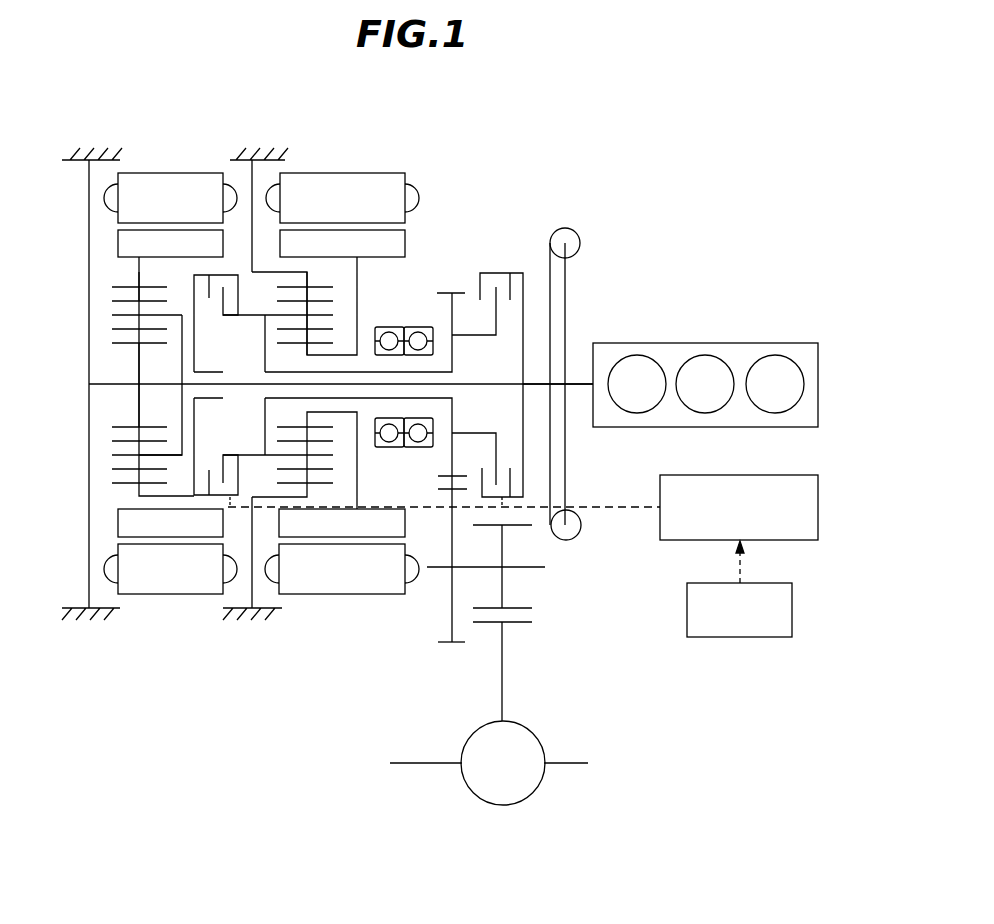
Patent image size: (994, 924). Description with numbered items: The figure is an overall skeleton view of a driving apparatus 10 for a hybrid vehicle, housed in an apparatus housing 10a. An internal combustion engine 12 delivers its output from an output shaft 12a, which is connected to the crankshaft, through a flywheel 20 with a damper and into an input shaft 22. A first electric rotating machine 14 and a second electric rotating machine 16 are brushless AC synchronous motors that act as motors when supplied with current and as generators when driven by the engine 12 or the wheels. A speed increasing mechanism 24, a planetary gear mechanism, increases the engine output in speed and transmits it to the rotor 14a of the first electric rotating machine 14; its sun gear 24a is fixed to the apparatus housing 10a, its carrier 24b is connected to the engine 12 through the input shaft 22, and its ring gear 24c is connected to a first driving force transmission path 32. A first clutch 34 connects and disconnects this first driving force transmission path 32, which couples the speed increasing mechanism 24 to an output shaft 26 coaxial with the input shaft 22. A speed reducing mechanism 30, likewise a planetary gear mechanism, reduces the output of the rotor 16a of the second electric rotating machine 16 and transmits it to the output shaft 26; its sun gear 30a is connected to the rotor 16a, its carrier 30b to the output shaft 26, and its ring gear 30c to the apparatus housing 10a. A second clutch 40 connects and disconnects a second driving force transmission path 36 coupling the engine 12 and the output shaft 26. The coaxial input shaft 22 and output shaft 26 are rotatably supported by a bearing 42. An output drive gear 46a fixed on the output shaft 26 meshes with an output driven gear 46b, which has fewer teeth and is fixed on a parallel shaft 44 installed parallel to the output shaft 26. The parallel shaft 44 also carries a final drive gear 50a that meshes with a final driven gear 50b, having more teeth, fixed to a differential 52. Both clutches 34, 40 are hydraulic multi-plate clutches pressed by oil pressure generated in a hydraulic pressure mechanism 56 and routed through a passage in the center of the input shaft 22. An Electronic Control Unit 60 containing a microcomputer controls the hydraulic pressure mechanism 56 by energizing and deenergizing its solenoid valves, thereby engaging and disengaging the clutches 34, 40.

The driving apparatus 10 is at (565, 215).
The apparatus housing 10a is at (118, 610).
The internal combustion engine 12 is at (762, 343).
The output shaft 12a is at (576, 387).
The first electric rotating machine 14 is at (176, 173).
The rotor 14a is at (118, 522).
The second electric rotating machine 16 is at (345, 173).
The rotor 16a is at (407, 243).
The flywheel 20 is at (567, 302).
The input shaft 22 is at (472, 386).
The speed increasing mechanism 24 is at (101, 379).
The sun gear 24a is at (137, 357).
The carrier 24b is at (117, 315).
The ring gear 24c is at (137, 279).
The output shaft 26 is at (263, 397).
The speed reducing mechanism 30 is at (330, 383).
The sun gear 30a is at (328, 342).
The carrier 30b is at (333, 314).
The ring gear 30c is at (307, 278).
The first driving force transmission path 32 is at (140, 271).
The first clutch 34 is at (213, 298).
The second driving force transmission path 36 is at (522, 340).
The second clutch 40 is at (493, 272).
The bearing 42 is at (380, 448).
The parallel shaft 44 is at (527, 567).
The output drive gear 46a is at (440, 482).
The output driven gear 46b is at (443, 647).
The final drive gear 50a is at (517, 607).
The final driven gear 50b is at (503, 697).
The differential 52 is at (527, 795).
The hydraulic pressure mechanism 56 is at (758, 475).
The Electronic Control Unit 60 is at (757, 583).